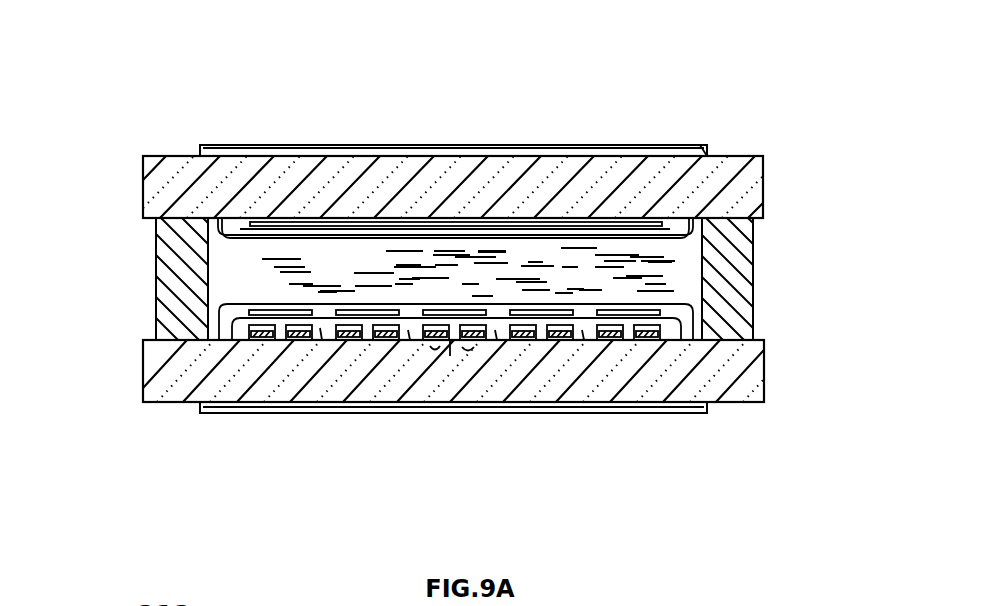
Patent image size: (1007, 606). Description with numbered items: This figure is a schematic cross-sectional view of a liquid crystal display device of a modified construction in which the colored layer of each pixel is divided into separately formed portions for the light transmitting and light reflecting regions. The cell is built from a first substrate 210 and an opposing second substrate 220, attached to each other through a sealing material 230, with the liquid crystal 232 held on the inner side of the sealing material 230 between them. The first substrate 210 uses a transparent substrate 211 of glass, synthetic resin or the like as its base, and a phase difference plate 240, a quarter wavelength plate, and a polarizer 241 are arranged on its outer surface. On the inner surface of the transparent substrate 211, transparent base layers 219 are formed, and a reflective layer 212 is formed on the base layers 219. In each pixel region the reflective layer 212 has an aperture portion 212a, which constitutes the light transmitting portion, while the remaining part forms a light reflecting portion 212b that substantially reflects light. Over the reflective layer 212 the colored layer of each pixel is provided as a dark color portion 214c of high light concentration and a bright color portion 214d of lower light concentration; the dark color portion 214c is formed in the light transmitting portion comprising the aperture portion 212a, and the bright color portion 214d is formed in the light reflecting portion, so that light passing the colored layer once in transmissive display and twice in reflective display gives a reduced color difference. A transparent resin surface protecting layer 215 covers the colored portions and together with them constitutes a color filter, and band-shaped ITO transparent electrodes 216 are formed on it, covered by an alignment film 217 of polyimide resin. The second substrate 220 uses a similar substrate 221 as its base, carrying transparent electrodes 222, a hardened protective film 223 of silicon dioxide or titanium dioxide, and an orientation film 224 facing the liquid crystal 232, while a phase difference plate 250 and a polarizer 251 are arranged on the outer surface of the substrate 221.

The first substrate 210 is at (453, 452).
The transparent substrate 211 is at (690, 395).
The reflective layer 212 is at (358, 343).
The aperture portion 212a is at (456, 357).
The light reflecting portion 212b is at (440, 343).
The dark color portion 214c is at (636, 340).
The bright color portion 214d is at (606, 336).
The surface protecting layer 215 is at (321, 338).
The transparent electrode 216 is at (292, 310).
The alignment film 217 is at (658, 298).
The transparent base layer 219 is at (655, 337).
The second substrate 220 is at (471, 122).
The substrate 221 is at (736, 156).
The transparent electrode 222 is at (443, 220).
The hardened protective film 223 is at (593, 218).
The orientation film 224 is at (240, 231).
The sealing material 230 is at (156, 295).
The liquid crystal 232 is at (683, 145).
The phase difference plate 240 is at (226, 413).
The polarizer 241 is at (253, 413).
The phase difference plate 250 is at (263, 145).
The polarizer 251 is at (375, 145).